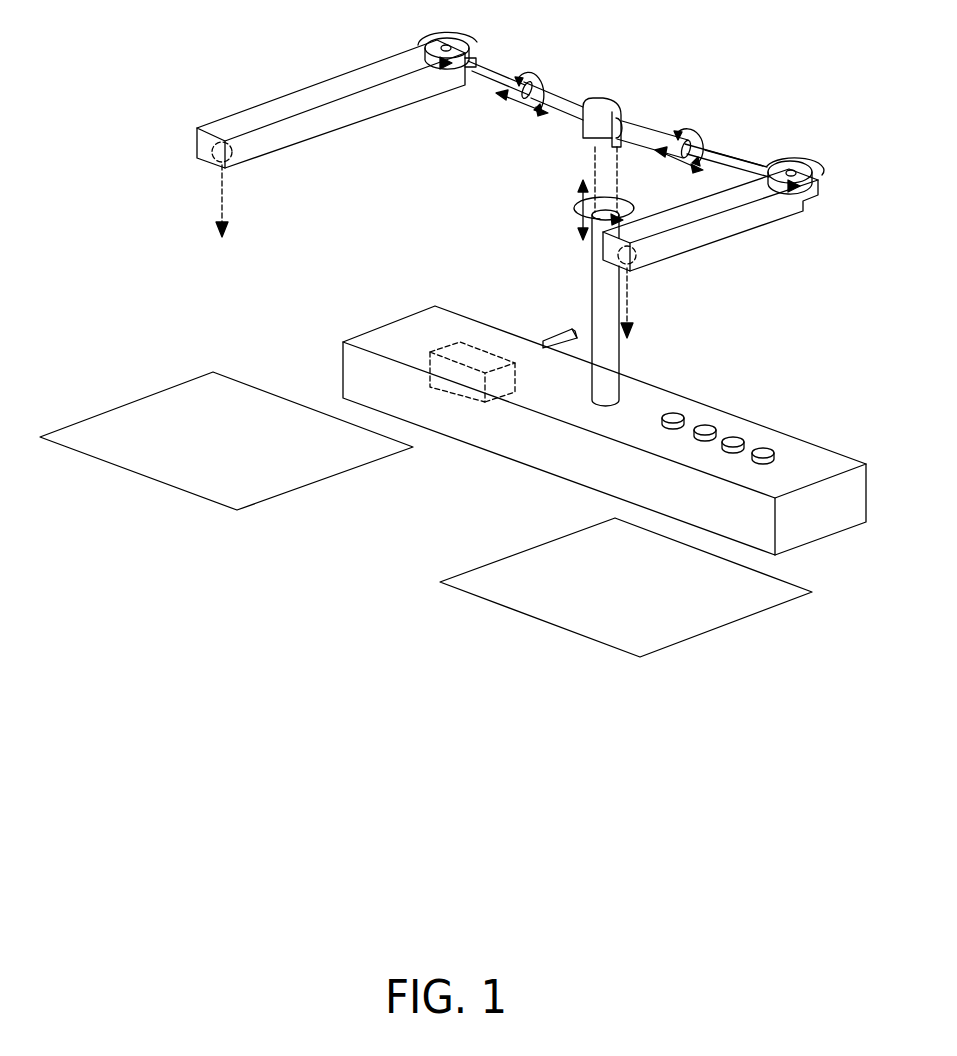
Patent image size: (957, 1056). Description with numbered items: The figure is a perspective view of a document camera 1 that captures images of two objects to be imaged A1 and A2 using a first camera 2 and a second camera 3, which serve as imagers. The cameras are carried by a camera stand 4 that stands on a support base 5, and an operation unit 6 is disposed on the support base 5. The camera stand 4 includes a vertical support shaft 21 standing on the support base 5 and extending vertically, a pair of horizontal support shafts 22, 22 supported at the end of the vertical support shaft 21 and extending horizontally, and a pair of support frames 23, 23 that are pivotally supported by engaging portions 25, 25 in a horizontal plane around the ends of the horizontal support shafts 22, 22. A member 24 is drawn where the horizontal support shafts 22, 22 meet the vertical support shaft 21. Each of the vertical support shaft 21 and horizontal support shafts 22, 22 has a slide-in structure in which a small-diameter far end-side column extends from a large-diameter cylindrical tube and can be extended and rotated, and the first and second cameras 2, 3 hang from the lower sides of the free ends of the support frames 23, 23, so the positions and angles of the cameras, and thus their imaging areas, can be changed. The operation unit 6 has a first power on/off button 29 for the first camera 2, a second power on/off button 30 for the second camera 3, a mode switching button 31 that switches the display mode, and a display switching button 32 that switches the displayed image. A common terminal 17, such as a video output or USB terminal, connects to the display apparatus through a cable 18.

The document camera 1 is at (666, 37).
The first camera 2 is at (233, 154).
The second camera 3 is at (637, 258).
The camera stand 4 is at (726, 152).
The support base 5 is at (650, 390).
The operation unit 6 is at (767, 377).
The common terminal 17 is at (465, 350).
The cable 18 is at (548, 339).
The vertical support shaft 21 is at (592, 299).
The horizontal support shaft 22 is at (562, 98).
The support frame 23 is at (354, 78).
The coupling member 24 is at (606, 110).
The engaging portion 25 is at (446, 45).
The first power on/off button 29 is at (677, 410).
The second power on/off button 30 is at (710, 423).
The mode switching button 31 is at (739, 435).
The display switching button 32 is at (768, 447).
The object to be imaged A1 is at (254, 393).
The object to be imaged A2 is at (785, 594).